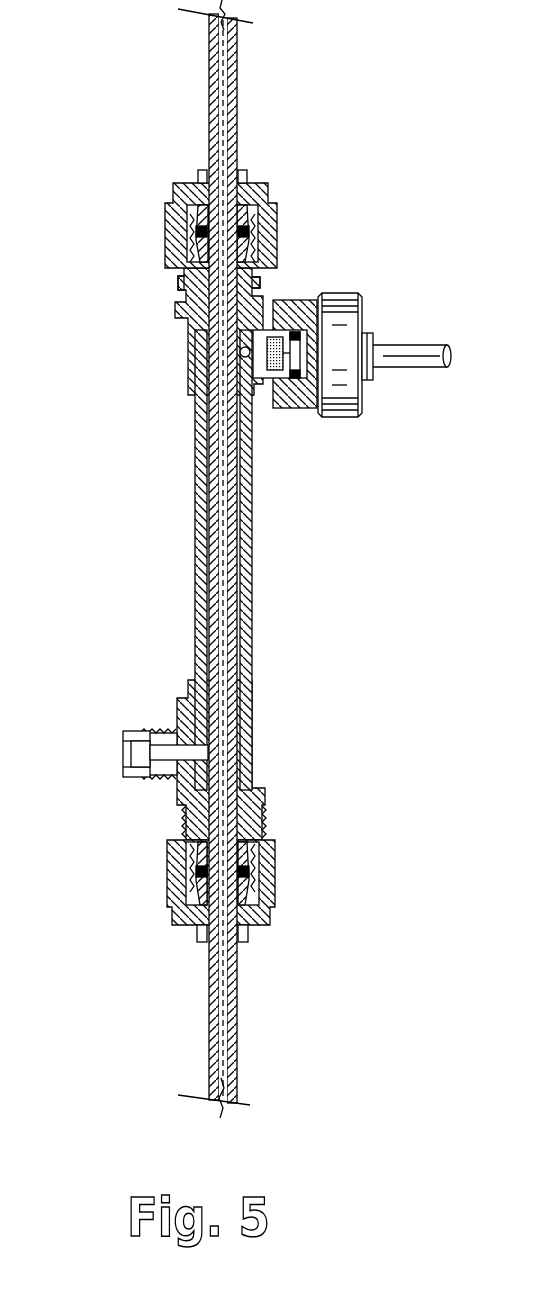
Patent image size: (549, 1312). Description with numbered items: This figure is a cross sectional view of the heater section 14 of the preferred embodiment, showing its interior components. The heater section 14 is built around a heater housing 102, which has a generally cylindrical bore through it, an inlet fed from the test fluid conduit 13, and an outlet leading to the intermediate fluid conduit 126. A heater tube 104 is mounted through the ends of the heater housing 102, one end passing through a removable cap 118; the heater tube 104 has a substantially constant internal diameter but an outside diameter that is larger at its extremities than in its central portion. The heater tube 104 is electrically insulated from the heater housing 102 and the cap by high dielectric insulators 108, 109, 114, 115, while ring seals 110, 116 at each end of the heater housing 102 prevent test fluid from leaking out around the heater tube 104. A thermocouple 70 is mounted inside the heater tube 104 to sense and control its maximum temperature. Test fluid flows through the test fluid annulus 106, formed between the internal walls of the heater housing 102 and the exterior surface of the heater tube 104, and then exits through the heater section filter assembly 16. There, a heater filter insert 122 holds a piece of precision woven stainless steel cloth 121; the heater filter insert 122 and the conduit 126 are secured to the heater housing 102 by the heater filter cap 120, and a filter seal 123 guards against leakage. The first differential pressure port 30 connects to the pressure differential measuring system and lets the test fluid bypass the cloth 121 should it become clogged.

The test fluid conduit 13 is at (111, 751).
The heater section 14 is at (183, 505).
The heater section filter assembly 16 is at (362, 342).
The first differential pressure port 30 is at (240, 349).
The thermocouple 70 is at (216, 98).
The heater housing 102 is at (241, 523).
The heater tube 104 is at (240, 68).
The test fluid annulus 106 is at (227, 588).
The high dielectric insulator 108 is at (240, 935).
The high dielectric insulator 109 is at (256, 824).
The ring seal 110 is at (247, 872).
The high dielectric insulator 114 is at (185, 288).
The high dielectric insulator 115 is at (238, 168).
The ring seal 116 is at (188, 230).
The removable cap 118 is at (272, 219).
The heater filter cap 120 is at (363, 392).
The precision woven stainless steel cloth 121 is at (263, 306).
The heater filter insert 122 is at (256, 384).
The filter seal 123 is at (291, 409).
The intermediate fluid conduit 126 is at (402, 342).